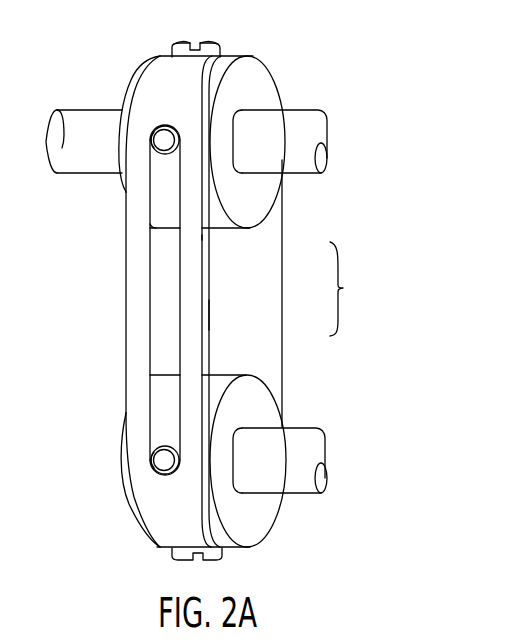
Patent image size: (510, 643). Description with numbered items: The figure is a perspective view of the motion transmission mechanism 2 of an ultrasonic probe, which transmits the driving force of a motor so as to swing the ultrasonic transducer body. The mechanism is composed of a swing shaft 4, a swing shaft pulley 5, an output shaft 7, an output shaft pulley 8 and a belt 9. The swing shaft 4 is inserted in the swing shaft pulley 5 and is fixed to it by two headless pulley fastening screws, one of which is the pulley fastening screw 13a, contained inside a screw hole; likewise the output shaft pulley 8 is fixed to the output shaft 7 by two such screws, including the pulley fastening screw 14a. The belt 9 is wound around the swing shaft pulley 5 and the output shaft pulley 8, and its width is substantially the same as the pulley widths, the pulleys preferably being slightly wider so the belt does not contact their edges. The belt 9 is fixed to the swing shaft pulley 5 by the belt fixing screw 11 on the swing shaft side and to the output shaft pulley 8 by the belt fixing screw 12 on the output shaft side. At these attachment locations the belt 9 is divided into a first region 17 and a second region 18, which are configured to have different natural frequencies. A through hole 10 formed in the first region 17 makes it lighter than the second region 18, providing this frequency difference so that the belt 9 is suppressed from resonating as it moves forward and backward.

The motion transmission mechanism 2 is at (340, 40).
The swing shaft 4 is at (82, 117).
The swing shaft pulley 5 is at (265, 83).
The output shaft 7 is at (298, 438).
The output shaft pulley 8 is at (265, 520).
The belt 9 is at (343, 288).
The through hole 10 is at (162, 290).
The belt fixing screw on the swing shaft side 11 is at (208, 42).
The belt fixing screw on the output shaft side 12 is at (180, 560).
The pulley fastening screw 13a is at (163, 142).
The pulley fastening screw 14a is at (168, 460).
The first region 17 is at (188, 317).
The second region 18 is at (260, 278).